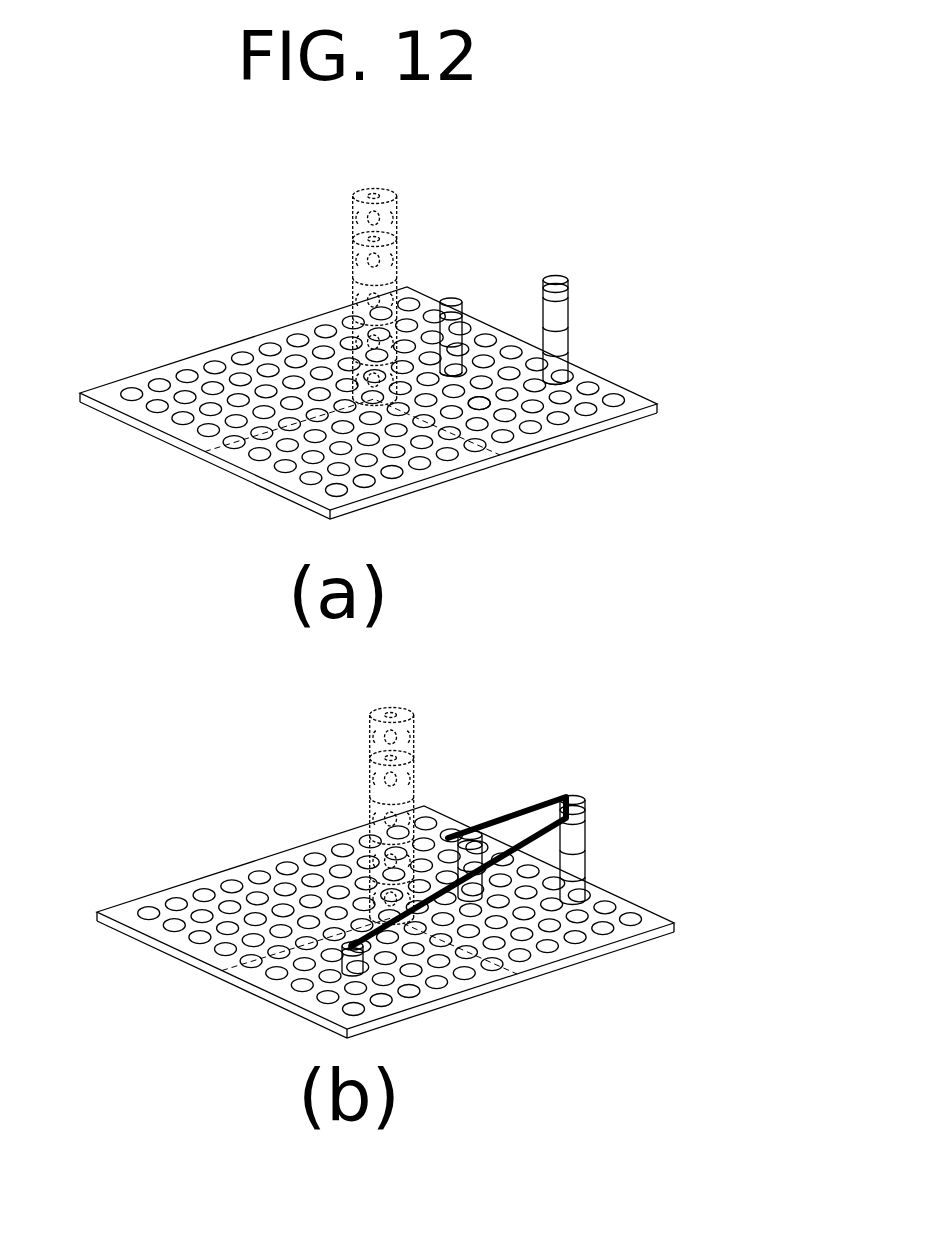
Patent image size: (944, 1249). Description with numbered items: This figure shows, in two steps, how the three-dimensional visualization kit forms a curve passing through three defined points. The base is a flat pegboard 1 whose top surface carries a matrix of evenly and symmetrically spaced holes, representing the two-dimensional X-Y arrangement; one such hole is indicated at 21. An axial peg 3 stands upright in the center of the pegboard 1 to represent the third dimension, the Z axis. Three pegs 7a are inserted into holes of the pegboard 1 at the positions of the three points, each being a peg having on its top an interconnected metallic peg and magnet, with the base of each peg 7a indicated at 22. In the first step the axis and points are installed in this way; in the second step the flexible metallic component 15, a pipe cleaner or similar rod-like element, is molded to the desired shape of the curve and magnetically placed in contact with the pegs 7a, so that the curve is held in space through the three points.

The pegboard 1 is at (205, 357).
The axial peg 3 is at (383, 230).
The peg with interconnected metallic peg and magnet 7a is at (453, 332).
The pipe cleaner 15 is at (563, 793).
The hole 21 is at (477, 402).
The peg base 22 is at (453, 370).